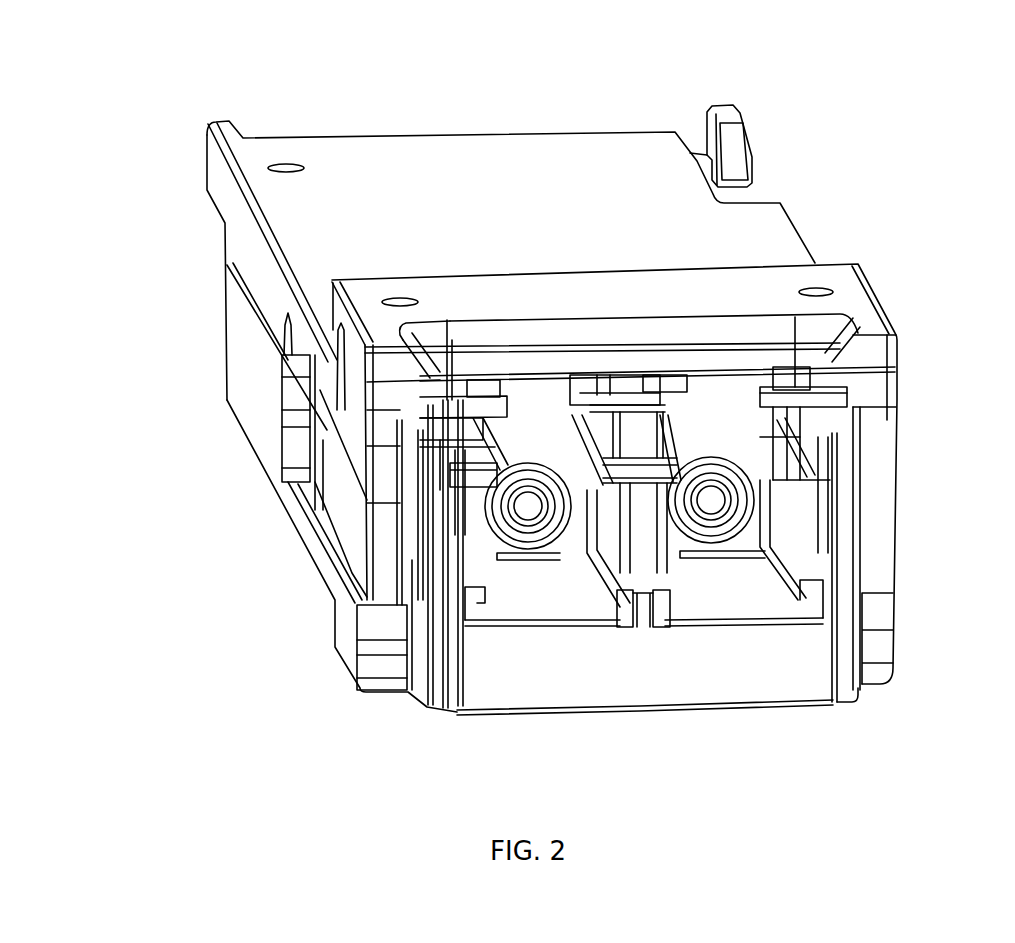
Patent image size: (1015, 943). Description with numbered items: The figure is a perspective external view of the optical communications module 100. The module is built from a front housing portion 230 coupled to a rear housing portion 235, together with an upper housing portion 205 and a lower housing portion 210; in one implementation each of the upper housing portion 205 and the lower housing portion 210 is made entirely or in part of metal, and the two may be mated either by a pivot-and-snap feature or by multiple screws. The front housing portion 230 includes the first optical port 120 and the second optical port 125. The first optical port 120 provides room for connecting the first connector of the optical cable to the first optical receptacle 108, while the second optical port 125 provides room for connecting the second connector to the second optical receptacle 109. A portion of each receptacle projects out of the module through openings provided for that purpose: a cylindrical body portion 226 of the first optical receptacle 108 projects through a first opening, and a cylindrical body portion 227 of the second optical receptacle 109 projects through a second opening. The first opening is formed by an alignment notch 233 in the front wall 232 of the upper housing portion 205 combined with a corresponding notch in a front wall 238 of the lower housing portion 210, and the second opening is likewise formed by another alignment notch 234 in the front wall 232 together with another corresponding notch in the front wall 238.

The optical communications module 100 is at (953, 155).
The upper housing portion 205 is at (205, 172).
The lower housing portion 210 is at (222, 338).
The front housing portion 230 is at (910, 310).
The rear housing portion 235 is at (822, 216).
The front wall 232 is at (521, 399).
The alignment notch 233 is at (504, 460).
The alignment notch 234 is at (680, 460).
The cylindrical body portion 226 is at (531, 466).
The cylindrical body portion 227 is at (712, 466).
The front wall 238 is at (494, 541).
The first optical receptacle 108 is at (565, 548).
The second optical receptacle 109 is at (749, 541).
The first optical port 120 is at (538, 610).
The second optical port 125 is at (713, 608).